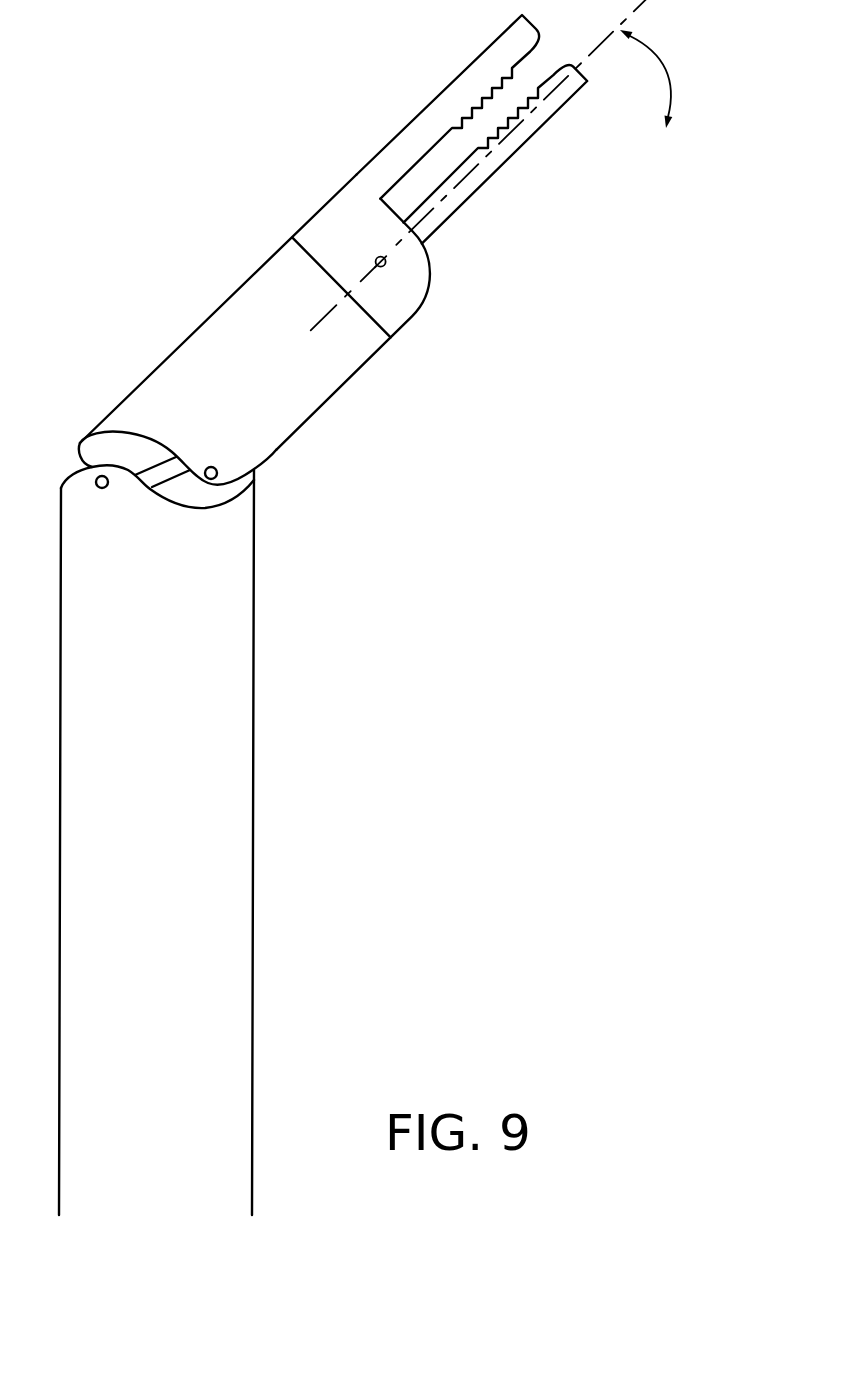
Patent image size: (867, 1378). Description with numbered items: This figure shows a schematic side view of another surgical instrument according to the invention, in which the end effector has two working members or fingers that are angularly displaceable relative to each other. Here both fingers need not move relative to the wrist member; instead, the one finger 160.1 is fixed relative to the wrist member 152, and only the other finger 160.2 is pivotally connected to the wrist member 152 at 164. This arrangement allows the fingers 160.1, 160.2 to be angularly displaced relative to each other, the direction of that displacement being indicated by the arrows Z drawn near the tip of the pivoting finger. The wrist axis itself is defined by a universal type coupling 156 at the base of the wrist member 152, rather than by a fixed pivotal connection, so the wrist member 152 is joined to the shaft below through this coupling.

The wrist member 152 is at (223, 336).
The finger 160.1 is at (459, 82).
The finger 160.2 is at (487, 176).
The pivotal connection 164 is at (398, 263).
The universal type coupling 156 is at (219, 452).
The arrows Z is at (661, 66).